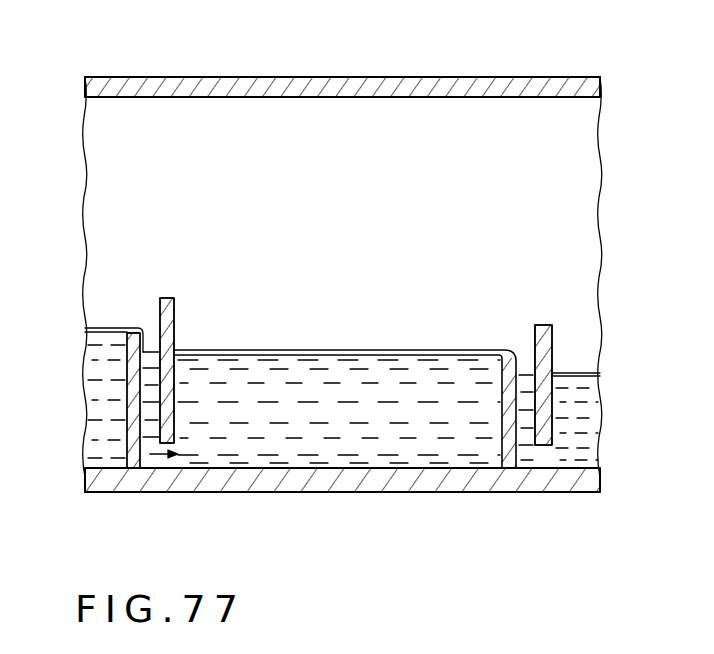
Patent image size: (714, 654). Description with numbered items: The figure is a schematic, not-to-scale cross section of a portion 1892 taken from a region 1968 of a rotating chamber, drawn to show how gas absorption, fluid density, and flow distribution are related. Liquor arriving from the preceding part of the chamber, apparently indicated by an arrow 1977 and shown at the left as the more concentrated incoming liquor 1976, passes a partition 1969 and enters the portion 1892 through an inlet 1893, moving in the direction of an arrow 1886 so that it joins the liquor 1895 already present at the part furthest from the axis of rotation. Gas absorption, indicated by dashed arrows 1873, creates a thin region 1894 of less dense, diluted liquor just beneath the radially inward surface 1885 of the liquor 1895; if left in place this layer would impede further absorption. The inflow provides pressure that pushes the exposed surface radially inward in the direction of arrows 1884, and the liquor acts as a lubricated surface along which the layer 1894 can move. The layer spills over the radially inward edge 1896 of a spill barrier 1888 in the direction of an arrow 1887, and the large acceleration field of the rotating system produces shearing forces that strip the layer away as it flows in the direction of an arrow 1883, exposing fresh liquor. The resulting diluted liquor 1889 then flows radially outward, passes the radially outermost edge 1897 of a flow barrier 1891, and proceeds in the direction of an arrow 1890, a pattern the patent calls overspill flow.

The region 1968 is at (598, 57).
The dashed arrows 1873 is at (217, 296).
The inlet flow 1977 is at (157, 338).
The outer wall 1976 is at (145, 378).
The partition wall 1969 is at (173, 347).
The arrow 1883 is at (264, 340).
The thin region 1894 is at (322, 350).
The radially inward surface 1885 is at (372, 344).
The arrow 1887 is at (530, 358).
The radially inward edge 1896 is at (507, 358).
The arrows 1884 is at (208, 372).
The liquor 1895 is at (400, 450).
The spill barrier 1888 is at (497, 438).
The diluted liquor 1889 is at (523, 414).
The flow barrier 1891 is at (601, 381).
The radially outermost edge 1897 is at (528, 454).
The arrow 1890 is at (508, 468).
The inlet 1893 is at (183, 444).
The arrow 1886 is at (148, 462).
The portion 1892 is at (541, 515).